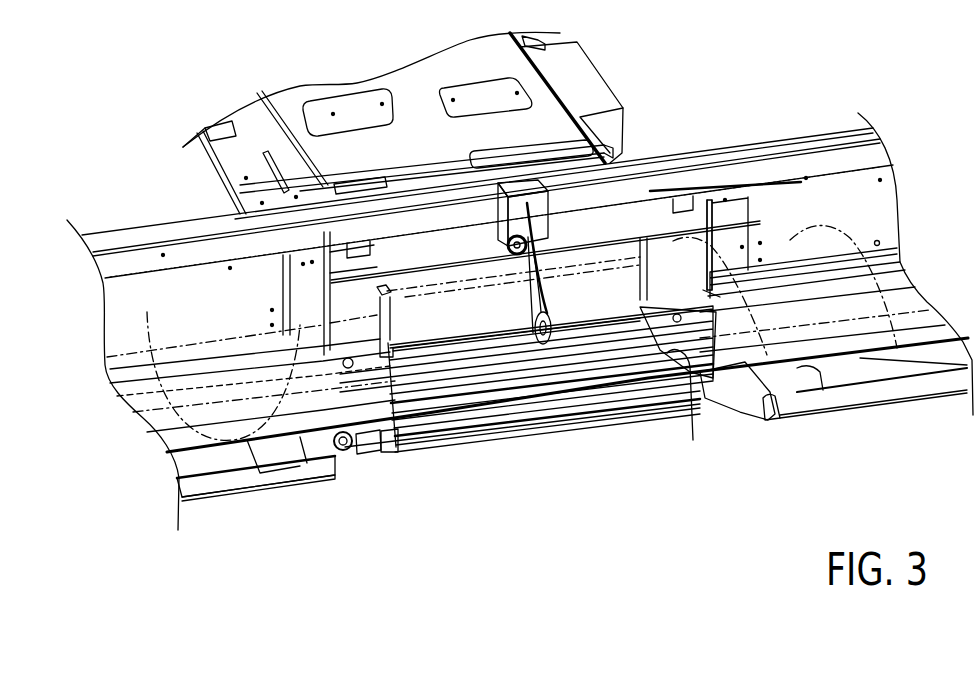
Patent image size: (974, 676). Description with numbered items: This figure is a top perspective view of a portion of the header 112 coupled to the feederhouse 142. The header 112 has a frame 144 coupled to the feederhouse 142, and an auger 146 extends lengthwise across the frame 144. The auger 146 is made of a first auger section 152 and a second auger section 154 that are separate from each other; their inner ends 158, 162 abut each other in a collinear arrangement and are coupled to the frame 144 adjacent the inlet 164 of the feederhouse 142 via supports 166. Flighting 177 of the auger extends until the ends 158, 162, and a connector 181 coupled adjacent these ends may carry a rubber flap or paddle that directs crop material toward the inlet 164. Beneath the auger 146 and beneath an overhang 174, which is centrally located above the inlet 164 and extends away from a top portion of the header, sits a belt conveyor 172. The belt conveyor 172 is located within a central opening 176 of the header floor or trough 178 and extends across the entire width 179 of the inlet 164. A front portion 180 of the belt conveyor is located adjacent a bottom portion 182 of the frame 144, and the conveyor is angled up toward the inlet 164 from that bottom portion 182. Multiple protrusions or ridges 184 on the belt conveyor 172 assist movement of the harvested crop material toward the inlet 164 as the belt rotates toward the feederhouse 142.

The header 112 is at (150, 218).
The feederhouse 142 is at (358, 113).
The frame 144 is at (106, 246).
The auger 146 is at (311, 395).
The first auger section 152 is at (215, 445).
The second auger section 154 is at (781, 235).
The end of first auger section 158 is at (524, 352).
The end of second auger section 162 is at (575, 370).
The inlet 164 is at (386, 311).
The supports 166 is at (590, 320).
The belt conveyor 172 is at (410, 432).
The overhang 174 is at (386, 281).
The central opening 176 is at (693, 440).
The flighting 177 is at (825, 300).
The header floor or trough 178 is at (731, 302).
The width of the inlet 179 is at (510, 260).
The front portion of the belt conveyor 180 is at (401, 437).
The connector 181 is at (781, 235).
The bottom portion of the frame 182 is at (255, 478).
The protrusions or ridges 184 is at (630, 340).